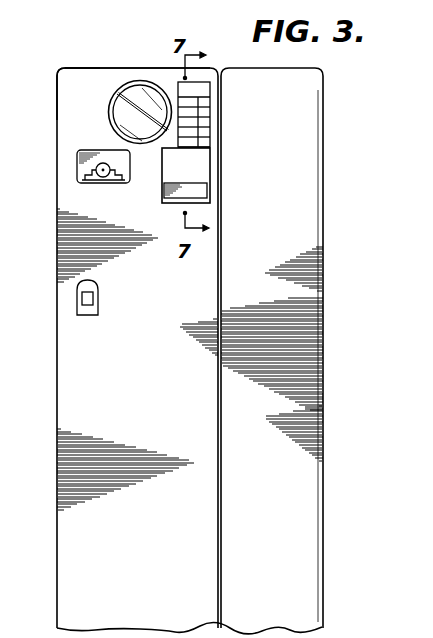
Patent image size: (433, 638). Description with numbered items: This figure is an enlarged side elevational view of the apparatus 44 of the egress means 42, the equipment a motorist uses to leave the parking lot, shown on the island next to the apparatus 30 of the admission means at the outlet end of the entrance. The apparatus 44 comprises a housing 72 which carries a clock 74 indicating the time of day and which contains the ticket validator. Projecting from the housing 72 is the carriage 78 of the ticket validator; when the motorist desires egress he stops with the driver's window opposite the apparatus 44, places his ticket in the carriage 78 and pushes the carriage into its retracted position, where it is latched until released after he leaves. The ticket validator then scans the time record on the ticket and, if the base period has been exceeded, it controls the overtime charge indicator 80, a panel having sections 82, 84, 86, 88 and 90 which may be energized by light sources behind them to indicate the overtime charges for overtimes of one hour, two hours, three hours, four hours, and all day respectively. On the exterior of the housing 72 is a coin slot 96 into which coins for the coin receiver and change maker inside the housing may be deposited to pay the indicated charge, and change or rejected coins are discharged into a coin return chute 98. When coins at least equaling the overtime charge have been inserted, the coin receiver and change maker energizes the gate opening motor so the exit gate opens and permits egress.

The apparatus 30 is at (294, 81).
The egress means 42 is at (60, 71).
The apparatus 44 is at (101, 68).
The housing 72 is at (66, 413).
The clock 74 is at (121, 116).
The carriage 78 is at (209, 192).
The overtime charge indicator 80 is at (212, 74).
The panel section 82 is at (210, 101).
The panel section 84 is at (210, 110).
The panel section 86 is at (210, 122).
The panel section 88 is at (210, 131).
The panel section 90 is at (210, 143).
The coin slot 96 is at (103, 178).
The coin return chute 98 is at (93, 298).